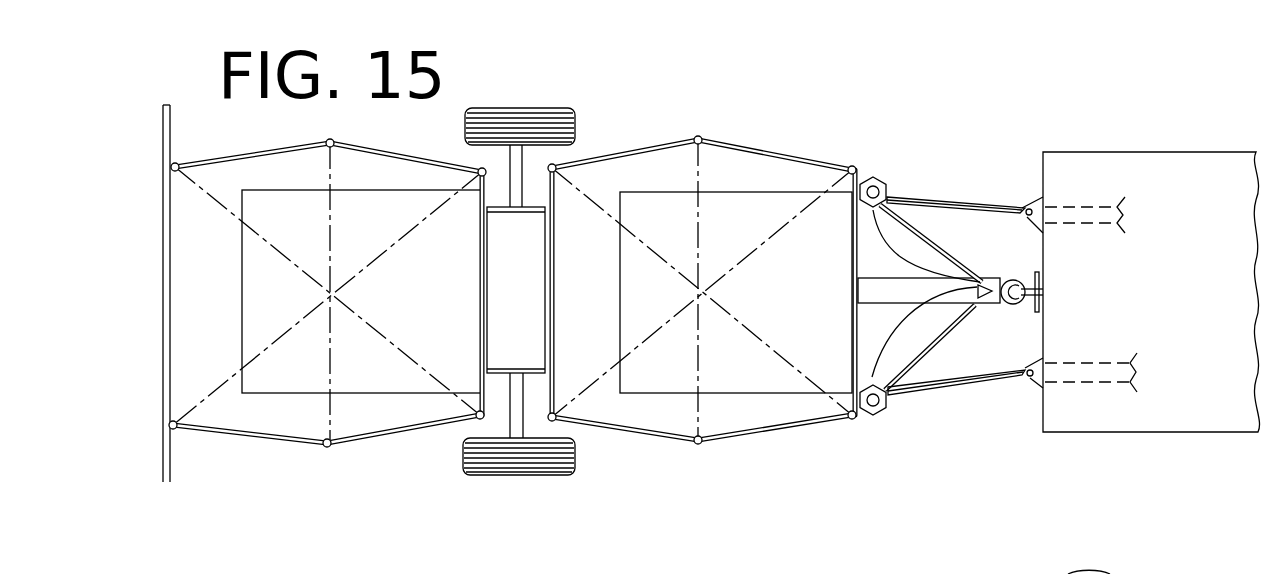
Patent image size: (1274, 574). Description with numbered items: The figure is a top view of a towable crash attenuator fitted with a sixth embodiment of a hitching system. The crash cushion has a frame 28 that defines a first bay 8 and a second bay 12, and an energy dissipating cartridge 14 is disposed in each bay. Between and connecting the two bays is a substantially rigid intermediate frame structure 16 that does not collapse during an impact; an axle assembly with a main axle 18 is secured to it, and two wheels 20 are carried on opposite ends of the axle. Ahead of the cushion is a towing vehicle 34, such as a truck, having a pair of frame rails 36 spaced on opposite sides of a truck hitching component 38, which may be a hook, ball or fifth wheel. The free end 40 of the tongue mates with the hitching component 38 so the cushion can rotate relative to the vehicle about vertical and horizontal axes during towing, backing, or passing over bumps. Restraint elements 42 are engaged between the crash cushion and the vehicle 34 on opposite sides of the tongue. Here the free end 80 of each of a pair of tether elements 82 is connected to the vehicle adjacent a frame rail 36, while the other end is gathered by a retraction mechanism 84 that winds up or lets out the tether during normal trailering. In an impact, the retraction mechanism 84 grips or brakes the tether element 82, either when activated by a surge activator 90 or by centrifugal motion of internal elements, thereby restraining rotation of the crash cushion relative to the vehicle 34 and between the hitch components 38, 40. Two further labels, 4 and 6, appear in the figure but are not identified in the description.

The frame member 4 is at (853, 340).
The wall surface 6 is at (163, 407).
The first bay 8 is at (510, 318).
The second bay 12 is at (702, 321).
The energy dissipating cartridge 14 is at (428, 304).
The frame structure 16 is at (523, 276).
The main axle 18 is at (518, 170).
The wheels 20 is at (557, 110).
The frame 28 is at (257, 440).
The vehicle 34 is at (1228, 294).
The frame rails 36 is at (1087, 218).
The hitching component 38 is at (1052, 297).
The free end of tongue 40 is at (1005, 306).
The restraint elements 42 is at (925, 197).
The free end of tether element 80 is at (1025, 207).
The tether elements 82 is at (967, 200).
The retraction mechanism 84 is at (870, 179).
The surge activator 90 is at (985, 283).